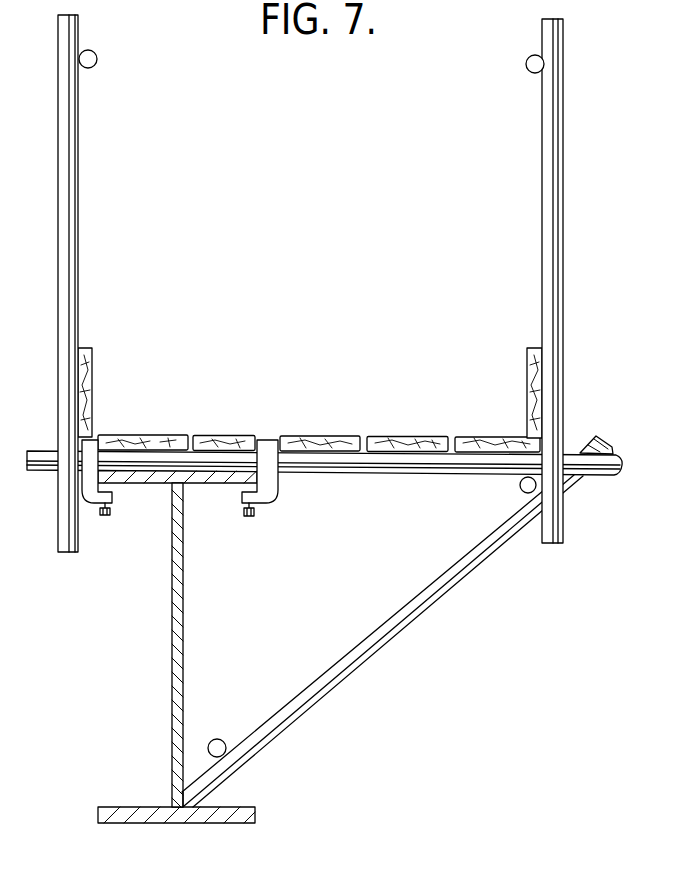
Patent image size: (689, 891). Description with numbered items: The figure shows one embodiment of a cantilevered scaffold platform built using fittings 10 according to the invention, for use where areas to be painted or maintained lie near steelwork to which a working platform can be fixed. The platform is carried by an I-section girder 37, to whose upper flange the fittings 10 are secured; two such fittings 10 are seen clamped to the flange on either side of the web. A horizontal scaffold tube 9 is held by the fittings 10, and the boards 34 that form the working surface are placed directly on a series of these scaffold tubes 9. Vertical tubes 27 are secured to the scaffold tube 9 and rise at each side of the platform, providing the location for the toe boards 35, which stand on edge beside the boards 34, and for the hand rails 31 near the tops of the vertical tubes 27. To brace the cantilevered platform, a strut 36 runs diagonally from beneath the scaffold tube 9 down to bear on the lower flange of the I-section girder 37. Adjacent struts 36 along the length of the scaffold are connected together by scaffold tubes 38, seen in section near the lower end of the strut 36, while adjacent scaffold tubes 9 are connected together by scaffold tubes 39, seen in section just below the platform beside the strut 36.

The scaffold tube 9 is at (622, 476).
The fitting 10 is at (95, 510).
The vertical tube 27 is at (70, 218).
The hand rail 31 is at (96, 64).
The board 34 is at (397, 436).
The toe board 35 is at (85, 376).
The strut 36 is at (343, 677).
The I-section girder 37 is at (222, 823).
The scaffold tube 38 is at (221, 738).
The scaffold tube 39 is at (519, 489).